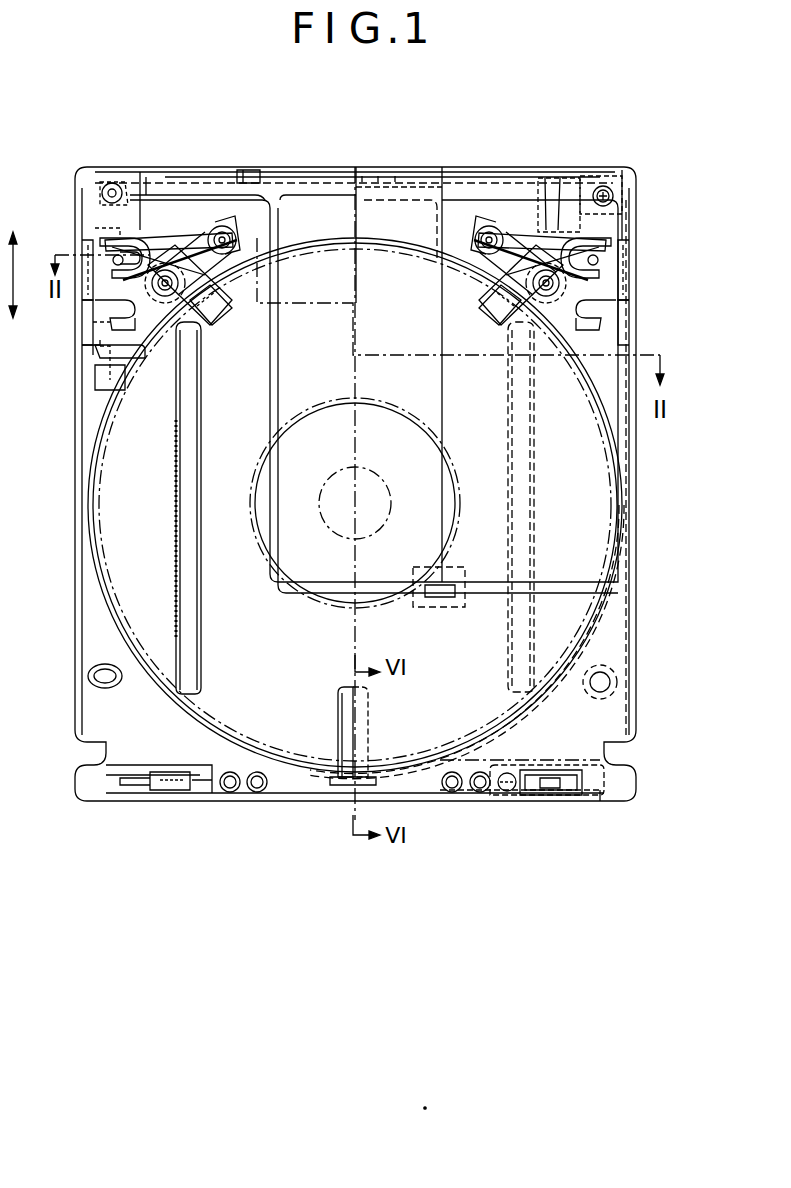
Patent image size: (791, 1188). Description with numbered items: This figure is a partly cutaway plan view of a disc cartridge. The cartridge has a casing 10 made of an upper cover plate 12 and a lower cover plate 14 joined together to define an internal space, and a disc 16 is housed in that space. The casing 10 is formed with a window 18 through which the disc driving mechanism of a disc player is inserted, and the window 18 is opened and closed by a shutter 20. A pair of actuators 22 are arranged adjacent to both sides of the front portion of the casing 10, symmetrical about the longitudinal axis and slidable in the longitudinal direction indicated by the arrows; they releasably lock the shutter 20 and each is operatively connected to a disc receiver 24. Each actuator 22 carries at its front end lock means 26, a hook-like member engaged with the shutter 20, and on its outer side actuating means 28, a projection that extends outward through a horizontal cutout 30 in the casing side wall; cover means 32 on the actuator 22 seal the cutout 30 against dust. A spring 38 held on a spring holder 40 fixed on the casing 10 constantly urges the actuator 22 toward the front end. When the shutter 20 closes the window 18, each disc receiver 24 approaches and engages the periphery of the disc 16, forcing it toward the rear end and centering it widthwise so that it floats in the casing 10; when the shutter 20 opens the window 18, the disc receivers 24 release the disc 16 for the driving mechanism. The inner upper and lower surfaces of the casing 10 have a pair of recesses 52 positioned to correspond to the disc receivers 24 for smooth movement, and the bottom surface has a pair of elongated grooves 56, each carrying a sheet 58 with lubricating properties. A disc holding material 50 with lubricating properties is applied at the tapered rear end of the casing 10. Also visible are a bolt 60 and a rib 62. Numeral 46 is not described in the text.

The casing 10 is at (645, 168).
The upper cover plate 12 is at (635, 656).
The lower cover plate 14 is at (95, 712).
The disc 16 is at (90, 547).
The window 18 is at (388, 195).
The shutter 20 is at (438, 420).
The actuator 22 is at (103, 238).
The disc receiver 24 is at (208, 300).
The lock means 26 is at (165, 232).
The actuating means 28 is at (80, 245).
The cutout 30 is at (80, 310).
The cover means 32 is at (80, 330).
The spring 38 is at (525, 232).
The spring holder 40 is at (224, 235).
The pivot pin 46 is at (165, 305).
The disc holding material 50 is at (338, 722).
The recess 52 is at (205, 322).
The elongated groove 56 is at (176, 527).
The sheet 58 is at (176, 485).
The bolt 60 is at (603, 184).
The rib 62 is at (118, 360).